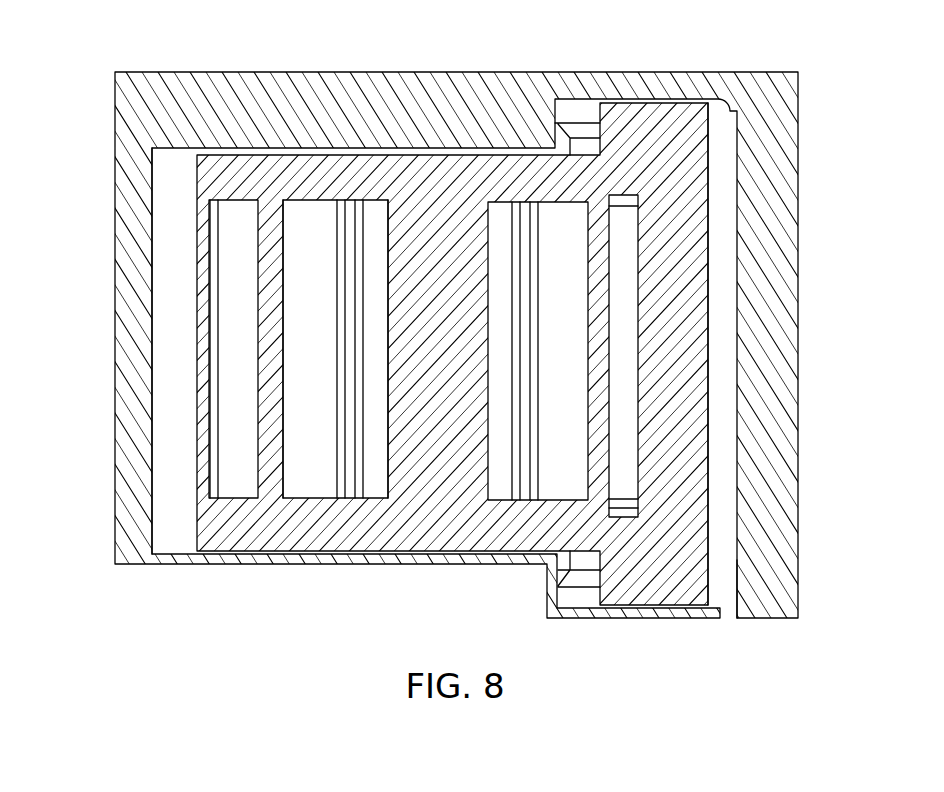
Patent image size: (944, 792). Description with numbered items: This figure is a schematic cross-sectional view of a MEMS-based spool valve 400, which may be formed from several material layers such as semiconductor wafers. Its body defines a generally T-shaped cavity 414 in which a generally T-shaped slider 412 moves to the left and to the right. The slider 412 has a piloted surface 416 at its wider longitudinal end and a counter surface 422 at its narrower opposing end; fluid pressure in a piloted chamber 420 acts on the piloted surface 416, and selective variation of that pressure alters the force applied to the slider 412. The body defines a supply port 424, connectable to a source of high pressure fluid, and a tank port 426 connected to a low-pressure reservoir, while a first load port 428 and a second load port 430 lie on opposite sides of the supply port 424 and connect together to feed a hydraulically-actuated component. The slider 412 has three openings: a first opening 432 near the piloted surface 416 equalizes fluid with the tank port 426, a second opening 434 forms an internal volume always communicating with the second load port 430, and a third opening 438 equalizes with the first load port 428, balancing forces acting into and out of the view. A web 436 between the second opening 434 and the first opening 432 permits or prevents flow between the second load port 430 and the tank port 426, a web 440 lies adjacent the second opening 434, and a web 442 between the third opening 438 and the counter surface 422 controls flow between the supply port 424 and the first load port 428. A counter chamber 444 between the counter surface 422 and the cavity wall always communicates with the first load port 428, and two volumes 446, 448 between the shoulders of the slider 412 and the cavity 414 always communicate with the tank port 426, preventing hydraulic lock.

The MEMS-based spool valve 400 is at (367, 582).
The slider 412 is at (637, 162).
The cavity 414 is at (724, 110).
The piloted surface 416 is at (709, 222).
The piloted chamber 420 is at (737, 592).
The counter surface 422 is at (260, 398).
The supply port 424 is at (345, 230).
The tank port 426 is at (623, 207).
The first load port 428 is at (222, 462).
The second load port 430 is at (533, 370).
The first opening 432 is at (637, 480).
The second opening 434 is at (490, 437).
The web 436 is at (588, 343).
The third opening 438 is at (390, 366).
The web 440 is at (445, 217).
The web 442 is at (283, 458).
The counter chamber 444 is at (152, 459).
The volume 446 is at (571, 553).
The volume 448 is at (572, 151).